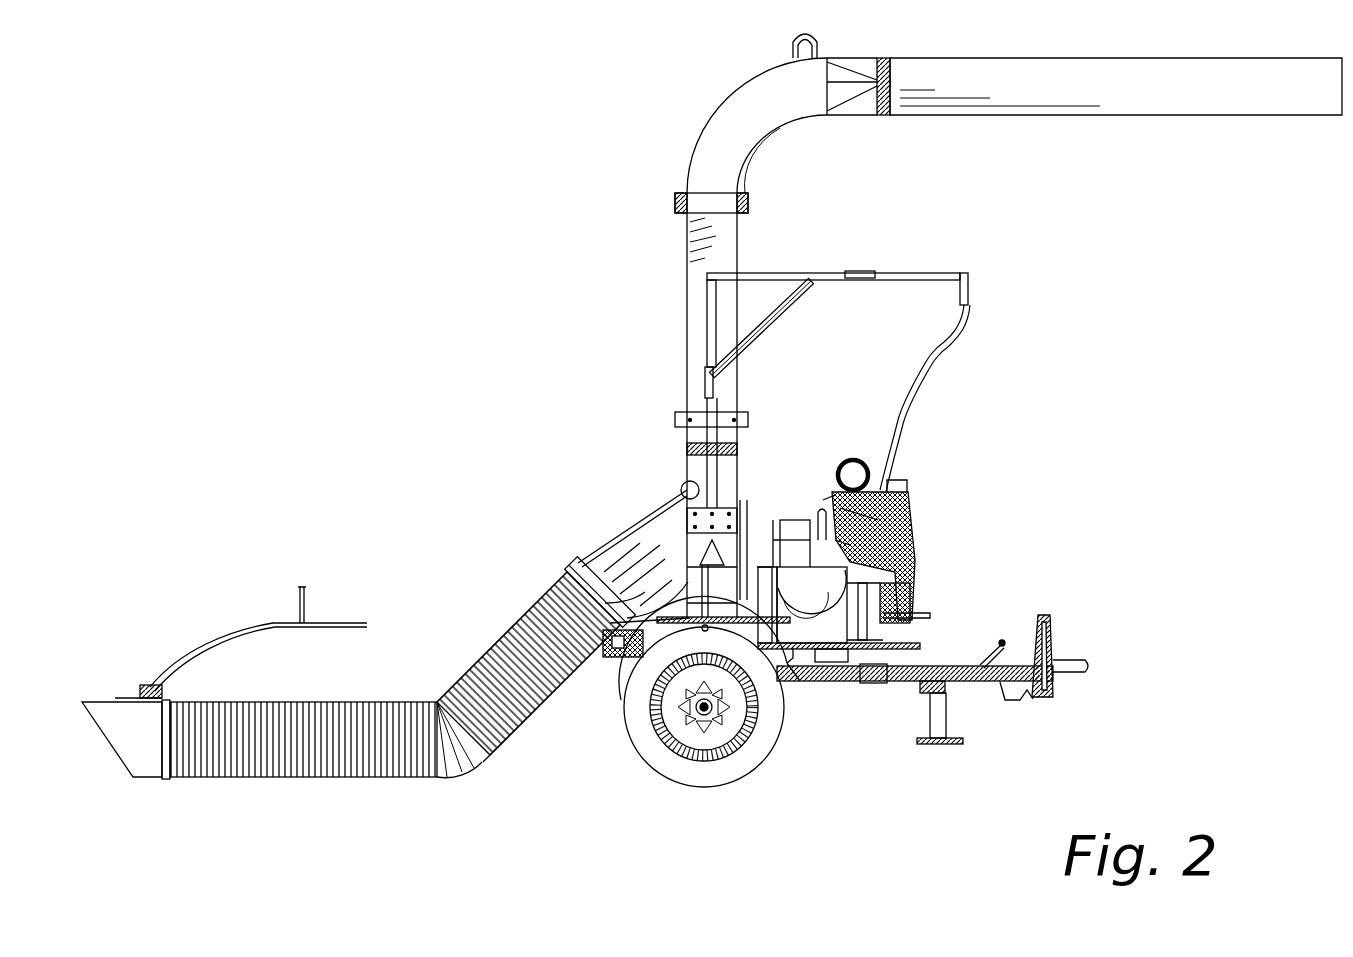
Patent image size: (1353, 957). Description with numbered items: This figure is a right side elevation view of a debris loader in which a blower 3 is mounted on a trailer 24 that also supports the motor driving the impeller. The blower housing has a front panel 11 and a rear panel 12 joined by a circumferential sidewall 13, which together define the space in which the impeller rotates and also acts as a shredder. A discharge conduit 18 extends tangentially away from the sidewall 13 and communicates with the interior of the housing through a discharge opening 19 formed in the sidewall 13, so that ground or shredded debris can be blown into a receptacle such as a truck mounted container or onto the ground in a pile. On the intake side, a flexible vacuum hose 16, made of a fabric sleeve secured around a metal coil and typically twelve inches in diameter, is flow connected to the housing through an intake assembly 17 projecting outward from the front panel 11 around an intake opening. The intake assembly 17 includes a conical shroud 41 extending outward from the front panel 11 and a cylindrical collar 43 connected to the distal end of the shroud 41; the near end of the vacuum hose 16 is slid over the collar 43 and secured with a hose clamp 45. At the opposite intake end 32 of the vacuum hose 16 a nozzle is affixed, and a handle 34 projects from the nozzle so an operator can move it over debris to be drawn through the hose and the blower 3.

The blower 3 is at (725, 462).
The front panel 11 is at (692, 482).
The rear panel 12 is at (740, 517).
The circumferential sidewall 13 is at (695, 545).
The vacuum hose 16 is at (313, 742).
The intake assembly 17 is at (590, 545).
The discharge conduit 18 is at (792, 102).
The discharge opening 19 is at (723, 410).
The trailer 24 is at (1012, 600).
The intake end 32 is at (130, 742).
The handle 34 is at (230, 637).
The conical shroud 41 is at (607, 630).
The cylindrical collar 43 is at (570, 612).
The hose clamp 45 is at (562, 585).